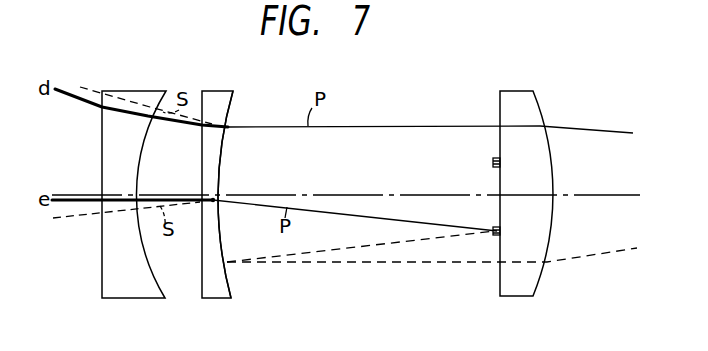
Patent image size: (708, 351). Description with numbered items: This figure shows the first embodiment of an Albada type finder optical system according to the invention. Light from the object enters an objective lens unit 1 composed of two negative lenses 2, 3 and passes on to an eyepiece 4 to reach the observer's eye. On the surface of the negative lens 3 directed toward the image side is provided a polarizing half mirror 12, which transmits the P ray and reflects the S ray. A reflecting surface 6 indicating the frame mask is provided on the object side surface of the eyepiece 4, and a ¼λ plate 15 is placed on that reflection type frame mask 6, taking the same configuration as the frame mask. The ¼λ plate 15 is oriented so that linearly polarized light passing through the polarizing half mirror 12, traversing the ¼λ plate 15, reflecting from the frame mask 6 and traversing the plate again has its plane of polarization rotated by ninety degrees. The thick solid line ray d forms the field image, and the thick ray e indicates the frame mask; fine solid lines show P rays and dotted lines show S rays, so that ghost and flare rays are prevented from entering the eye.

The objective lens unit 1 is at (242, 87).
The negative lens 2 is at (145, 298).
The negative lens 3 is at (222, 298).
The eyepiece 4 is at (520, 91).
The reflecting surface 6 is at (497, 236).
The polarizing half mirror 12 is at (229, 110).
The ¼λ plate 15 is at (493, 229).